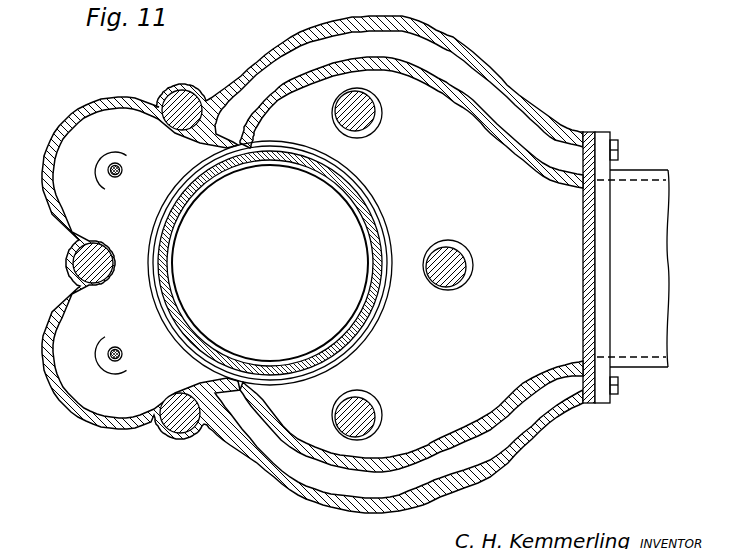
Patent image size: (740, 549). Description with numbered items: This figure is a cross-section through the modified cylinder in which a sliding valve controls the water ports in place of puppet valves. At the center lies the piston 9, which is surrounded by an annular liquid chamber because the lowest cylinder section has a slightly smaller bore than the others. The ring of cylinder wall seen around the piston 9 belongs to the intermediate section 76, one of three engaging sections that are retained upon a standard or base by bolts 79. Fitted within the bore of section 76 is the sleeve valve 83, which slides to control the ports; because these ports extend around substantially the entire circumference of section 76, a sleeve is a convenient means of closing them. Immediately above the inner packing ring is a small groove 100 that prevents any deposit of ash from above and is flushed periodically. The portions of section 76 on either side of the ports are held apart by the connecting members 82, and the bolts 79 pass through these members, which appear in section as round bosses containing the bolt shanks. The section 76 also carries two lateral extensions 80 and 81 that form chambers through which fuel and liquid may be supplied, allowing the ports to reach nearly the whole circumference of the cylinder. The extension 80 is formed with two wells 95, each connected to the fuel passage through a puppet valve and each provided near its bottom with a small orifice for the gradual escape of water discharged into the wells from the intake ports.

The piston 9 is at (270, 263).
The intermediate section 76 is at (487, 70).
The bolts 79 is at (465, 280).
The lateral extension 80 is at (107, 220).
The lateral extension 81 is at (563, 178).
The connecting members 82 is at (450, 244).
The sleeve valve 83 is at (376, 299).
The wells 95 is at (87, 340).
The groove 100 is at (363, 210).